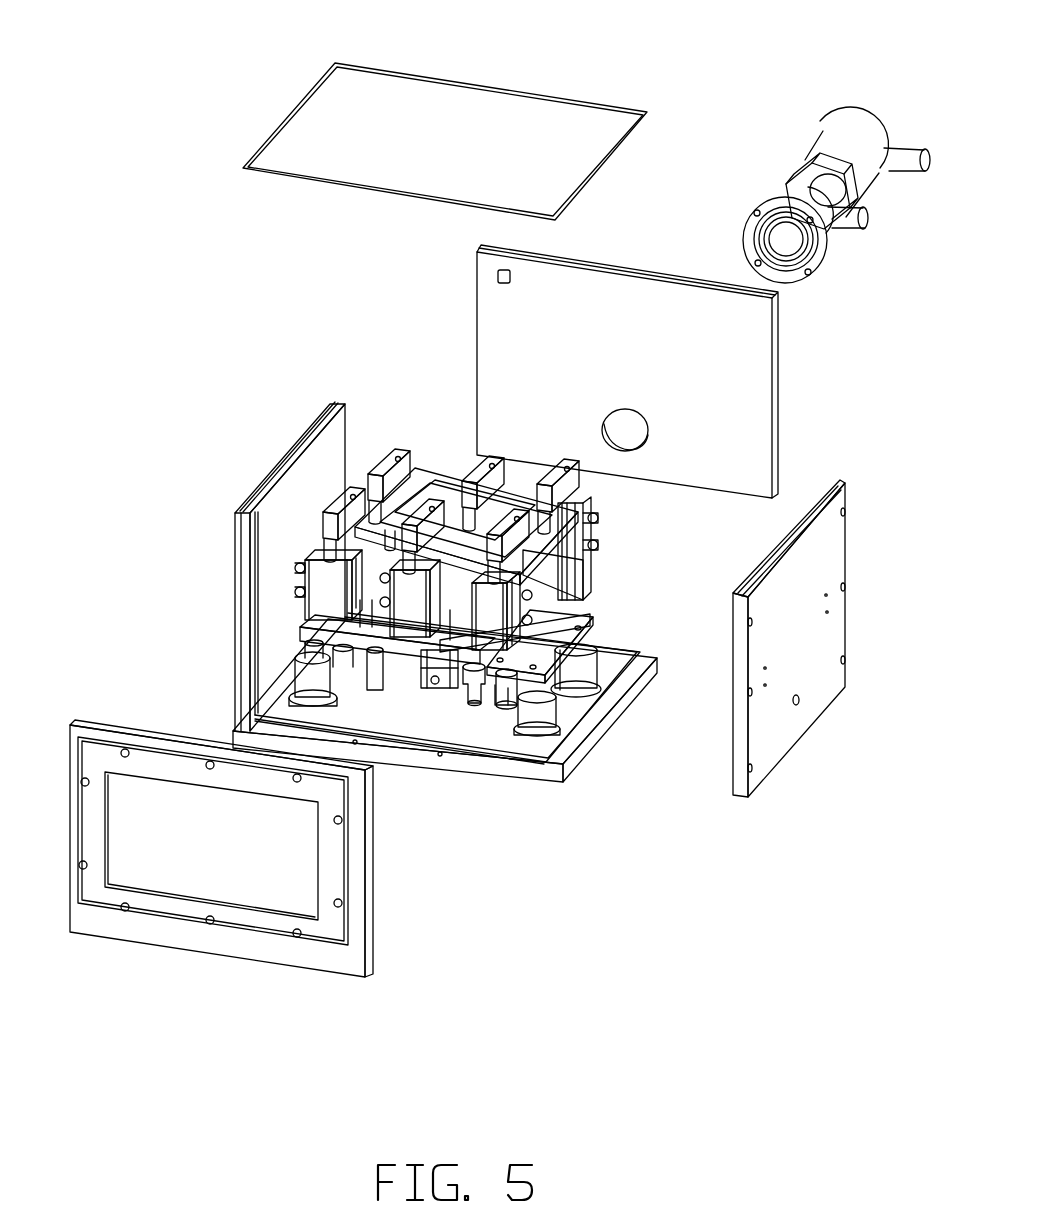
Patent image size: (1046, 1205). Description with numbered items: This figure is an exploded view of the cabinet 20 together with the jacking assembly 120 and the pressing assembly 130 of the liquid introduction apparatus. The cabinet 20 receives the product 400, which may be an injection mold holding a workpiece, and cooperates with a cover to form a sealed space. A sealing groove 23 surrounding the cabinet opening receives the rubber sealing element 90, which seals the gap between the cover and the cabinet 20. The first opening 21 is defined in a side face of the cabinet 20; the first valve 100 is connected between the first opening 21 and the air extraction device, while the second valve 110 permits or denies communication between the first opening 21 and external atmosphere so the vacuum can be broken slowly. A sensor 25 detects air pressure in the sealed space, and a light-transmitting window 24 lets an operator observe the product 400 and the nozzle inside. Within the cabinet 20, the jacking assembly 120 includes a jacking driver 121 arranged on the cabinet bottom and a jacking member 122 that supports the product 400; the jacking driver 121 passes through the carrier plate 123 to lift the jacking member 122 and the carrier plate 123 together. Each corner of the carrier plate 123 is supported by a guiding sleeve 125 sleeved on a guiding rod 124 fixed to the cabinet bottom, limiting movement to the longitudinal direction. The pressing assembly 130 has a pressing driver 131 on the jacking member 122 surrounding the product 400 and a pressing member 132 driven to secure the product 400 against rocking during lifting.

The cabinet 20 is at (401, 576).
The first opening 21 is at (615, 371).
The sealing groove 23 is at (318, 411).
The window 24 is at (203, 884).
The sensor 25 is at (497, 276).
The sealing element 90 is at (457, 83).
The first valve 100 is at (836, 198).
The second valve 110 is at (903, 165).
The jacking assembly 120 is at (495, 771).
The jacking driver 121 is at (435, 684).
The jacking member 122 is at (478, 702).
The carrier plate 123 is at (603, 718).
The guiding rod 124 is at (508, 682).
The guiding sleeve 125 is at (543, 647).
The pressing assembly 130 is at (237, 526).
The pressing driver 131 is at (322, 580).
The pressing member 132 is at (333, 523).
The product 400 is at (458, 538).